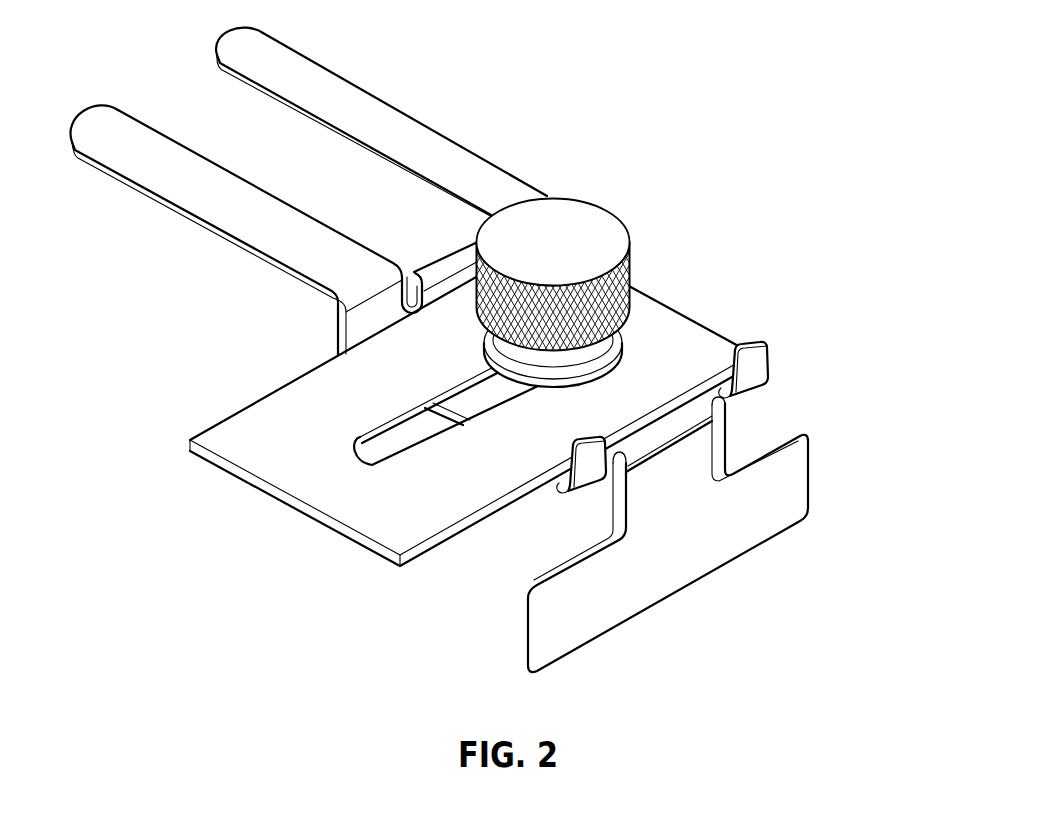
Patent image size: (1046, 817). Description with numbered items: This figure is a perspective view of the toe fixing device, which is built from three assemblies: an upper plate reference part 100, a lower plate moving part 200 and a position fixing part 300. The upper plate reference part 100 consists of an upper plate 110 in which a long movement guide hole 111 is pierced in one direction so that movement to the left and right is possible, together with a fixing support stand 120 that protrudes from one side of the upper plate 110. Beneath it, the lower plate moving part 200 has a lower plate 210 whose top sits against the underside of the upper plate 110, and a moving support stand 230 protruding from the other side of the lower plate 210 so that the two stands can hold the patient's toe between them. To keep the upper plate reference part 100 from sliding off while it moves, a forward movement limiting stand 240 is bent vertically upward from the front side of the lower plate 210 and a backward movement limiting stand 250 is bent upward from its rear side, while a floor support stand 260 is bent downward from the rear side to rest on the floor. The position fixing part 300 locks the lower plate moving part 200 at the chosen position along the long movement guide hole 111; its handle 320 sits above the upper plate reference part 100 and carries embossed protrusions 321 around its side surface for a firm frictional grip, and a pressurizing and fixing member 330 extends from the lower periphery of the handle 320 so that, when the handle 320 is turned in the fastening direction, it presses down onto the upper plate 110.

The upper plate reference part 100 is at (449, 325).
The upper plate 110 is at (365, 518).
The long movement guide hole 111 is at (410, 447).
The fixing support stand 120 is at (367, 96).
The lower plate moving part 200 is at (500, 362).
The lower plate 210 is at (462, 415).
The moving support stand 230 is at (102, 127).
The forward movement limiting stand 240 is at (448, 254).
The backward movement limiting stand 250 is at (771, 354).
The floor support stand 260 is at (698, 545).
The position fixing part 300 is at (630, 226).
The handle 320 is at (595, 233).
The embossed protrusions 321 is at (640, 347).
The pressurizing and fixing member 330 is at (622, 357).